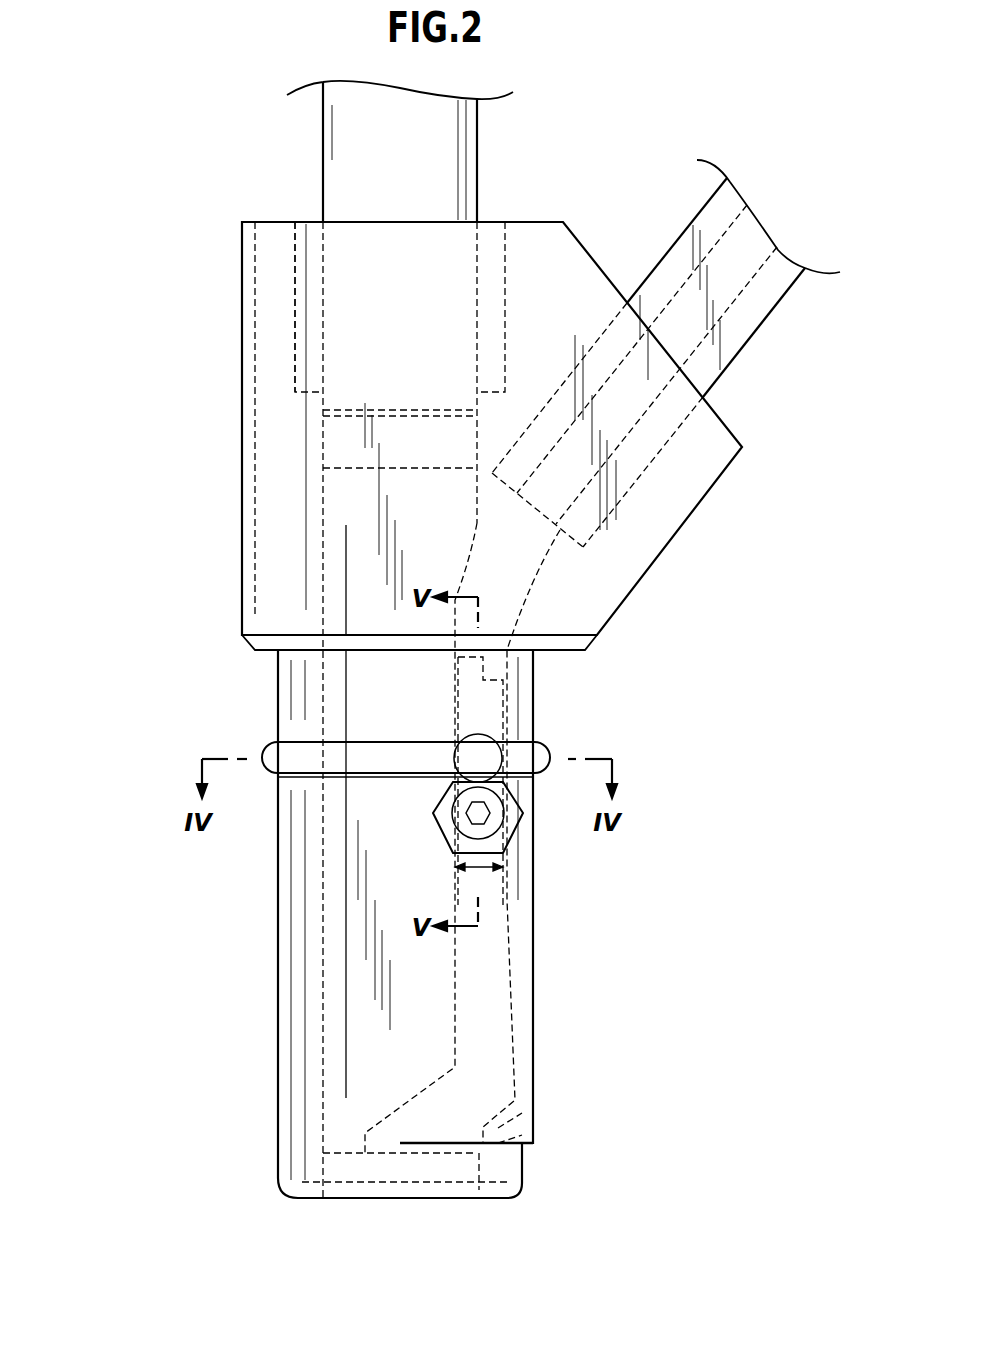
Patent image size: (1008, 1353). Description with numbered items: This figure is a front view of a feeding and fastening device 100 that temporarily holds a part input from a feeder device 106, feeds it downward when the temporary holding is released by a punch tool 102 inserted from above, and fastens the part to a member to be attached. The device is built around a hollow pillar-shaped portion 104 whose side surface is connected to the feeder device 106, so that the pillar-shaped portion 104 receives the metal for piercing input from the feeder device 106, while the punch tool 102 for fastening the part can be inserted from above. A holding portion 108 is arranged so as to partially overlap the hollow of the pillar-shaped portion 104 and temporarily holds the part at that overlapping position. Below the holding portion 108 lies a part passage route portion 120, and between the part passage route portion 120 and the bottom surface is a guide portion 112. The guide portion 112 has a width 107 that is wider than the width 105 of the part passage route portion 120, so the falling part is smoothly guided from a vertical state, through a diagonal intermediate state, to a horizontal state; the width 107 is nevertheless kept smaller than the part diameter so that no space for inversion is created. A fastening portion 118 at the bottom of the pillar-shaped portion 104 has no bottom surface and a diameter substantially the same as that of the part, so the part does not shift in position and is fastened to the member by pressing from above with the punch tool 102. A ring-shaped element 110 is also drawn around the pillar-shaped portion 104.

The feeding and fastening device 100 is at (155, 1143).
The punch tool 102 is at (323, 140).
The pillar-shaped portion 104 is at (278, 1170).
The width of the part passage route portion 105 is at (478, 870).
The feeder device 106 is at (753, 338).
The width of the guide portion 107 is at (455, 1072).
The holding portion 108 is at (522, 722).
The ring portion 110 is at (263, 748).
The guide portion 112 is at (522, 1136).
The fastening portion 118 is at (388, 1175).
The part passage route portion 120 is at (523, 983).